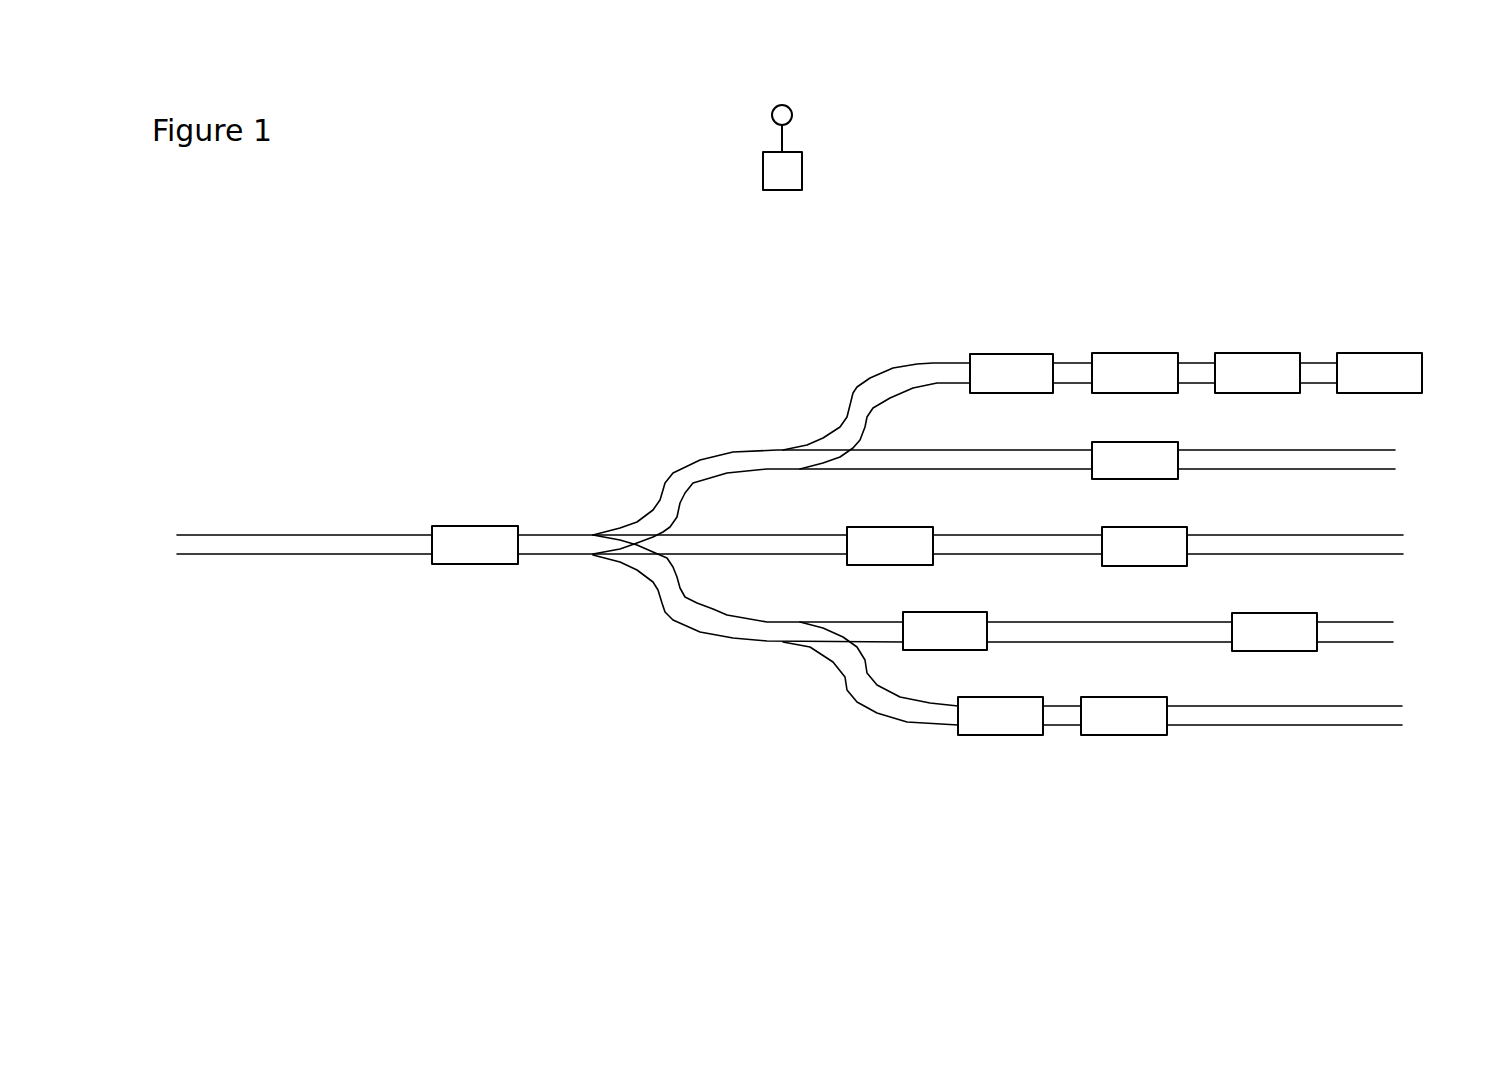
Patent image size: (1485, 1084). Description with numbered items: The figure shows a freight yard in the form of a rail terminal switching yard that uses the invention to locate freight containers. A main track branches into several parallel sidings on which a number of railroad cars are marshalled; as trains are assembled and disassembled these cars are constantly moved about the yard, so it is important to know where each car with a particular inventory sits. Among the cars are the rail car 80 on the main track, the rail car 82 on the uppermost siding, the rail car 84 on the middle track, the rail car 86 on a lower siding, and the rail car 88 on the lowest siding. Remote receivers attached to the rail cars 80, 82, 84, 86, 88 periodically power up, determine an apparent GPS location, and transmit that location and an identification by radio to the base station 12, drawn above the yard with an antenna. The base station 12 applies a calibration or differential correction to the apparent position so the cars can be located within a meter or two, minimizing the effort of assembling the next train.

The base station 12 is at (790, 172).
The rail car 80 is at (457, 527).
The rail car 82 is at (1250, 370).
The rail car 84 is at (1168, 538).
The rail car 86 is at (955, 623).
The rail car 88 is at (1132, 728).